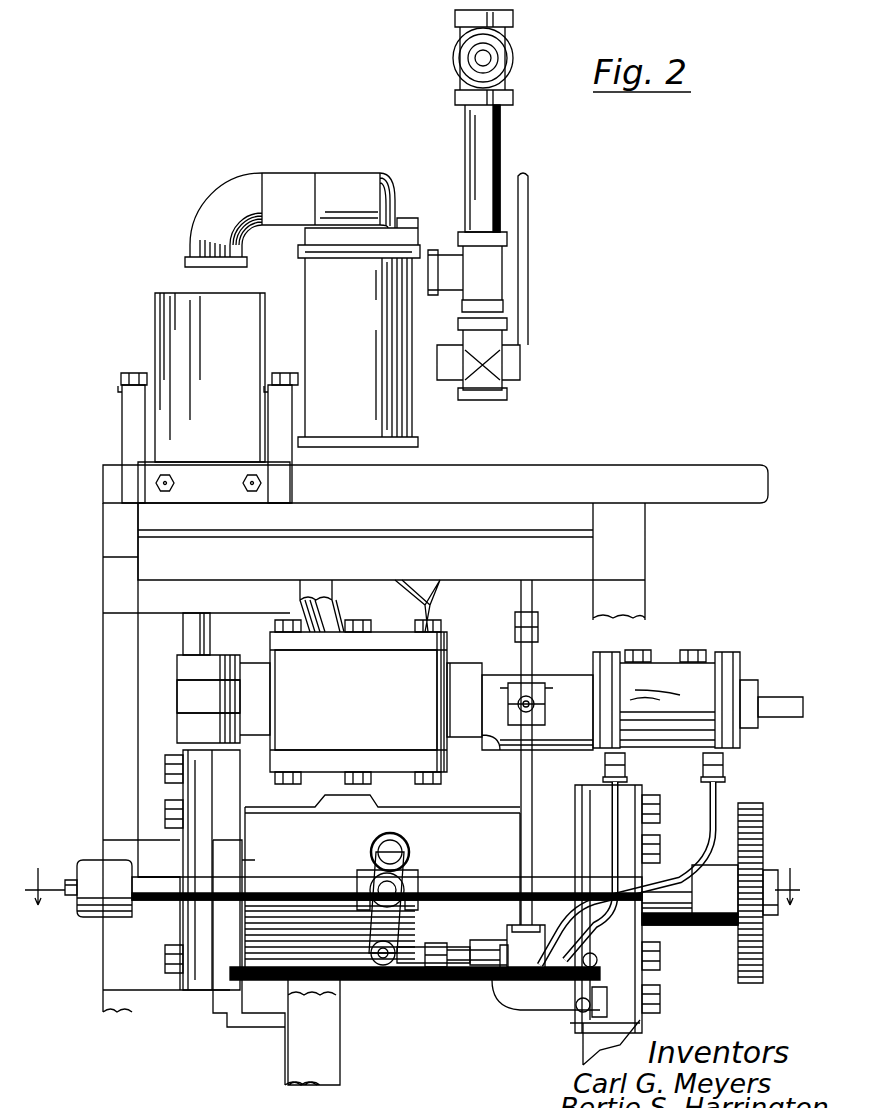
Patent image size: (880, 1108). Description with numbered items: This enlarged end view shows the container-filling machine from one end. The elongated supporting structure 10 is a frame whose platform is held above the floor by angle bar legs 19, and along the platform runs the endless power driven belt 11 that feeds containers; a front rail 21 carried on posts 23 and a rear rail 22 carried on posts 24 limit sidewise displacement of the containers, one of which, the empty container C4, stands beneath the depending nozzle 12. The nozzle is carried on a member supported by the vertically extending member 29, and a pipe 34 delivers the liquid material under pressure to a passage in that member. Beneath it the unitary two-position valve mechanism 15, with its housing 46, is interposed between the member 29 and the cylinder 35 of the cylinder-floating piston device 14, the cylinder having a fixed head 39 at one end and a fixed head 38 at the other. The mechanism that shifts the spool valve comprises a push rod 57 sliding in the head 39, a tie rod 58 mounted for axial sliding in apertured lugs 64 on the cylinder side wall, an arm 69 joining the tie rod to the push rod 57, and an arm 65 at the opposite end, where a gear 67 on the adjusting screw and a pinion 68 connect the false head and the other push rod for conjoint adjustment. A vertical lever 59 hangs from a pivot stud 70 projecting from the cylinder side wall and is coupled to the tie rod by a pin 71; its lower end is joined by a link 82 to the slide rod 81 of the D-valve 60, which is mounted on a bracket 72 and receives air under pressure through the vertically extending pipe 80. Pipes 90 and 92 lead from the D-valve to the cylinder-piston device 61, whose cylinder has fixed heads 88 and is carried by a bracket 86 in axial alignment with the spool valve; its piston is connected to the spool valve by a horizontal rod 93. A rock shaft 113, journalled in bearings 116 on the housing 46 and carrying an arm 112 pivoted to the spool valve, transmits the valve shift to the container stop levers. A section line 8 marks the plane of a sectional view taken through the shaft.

The supporting structure 10 is at (544, 510).
The legs 19 is at (110, 786).
The endless power driven belt 11 is at (214, 459).
The nozzle 12 is at (190, 232).
The front rail 21 is at (121, 380).
The rear rail 22 is at (298, 382).
The posts 23 is at (122, 421).
The posts 24 is at (292, 413).
The container C4 is at (160, 323).
The vertically extending member 29 is at (359, 332).
The pipe 34 is at (500, 150).
The rock shaft 113 is at (210, 637).
The bearings 116 is at (177, 670).
The arm 112 is at (185, 698).
The valve mechanism 15 is at (446, 660).
The housing 46 is at (356, 700).
The bracket 86 is at (560, 750).
The cylinder-piston device 61 is at (672, 660).
The fixed heads 88 is at (736, 660).
The rod 93 is at (778, 717).
The pipe 90 is at (622, 805).
The pipe 92 is at (718, 795).
The pipe 80 is at (532, 843).
The D-valve 60 is at (512, 930).
The cylinder 35 is at (462, 825).
The fixed head 39 is at (188, 793).
The fixed head 38 is at (645, 828).
The tie rod 58 is at (300, 900).
The cylinder-floating piston device 14 is at (294, 846).
The arm 69 is at (83, 917).
The push rod 57 is at (70, 880).
The section line 8 is at (412, 875).
The apertured lugs 64 is at (245, 885).
The pivot stud 70 is at (402, 842).
The pin 71 is at (395, 888).
The lever 59 is at (400, 922).
The link 82 is at (405, 955).
The slide rod 81 is at (440, 967).
The bracket 72 is at (530, 1010).
The arm 65 is at (720, 925).
The gear 67 is at (763, 815).
The pinion 68 is at (770, 915).